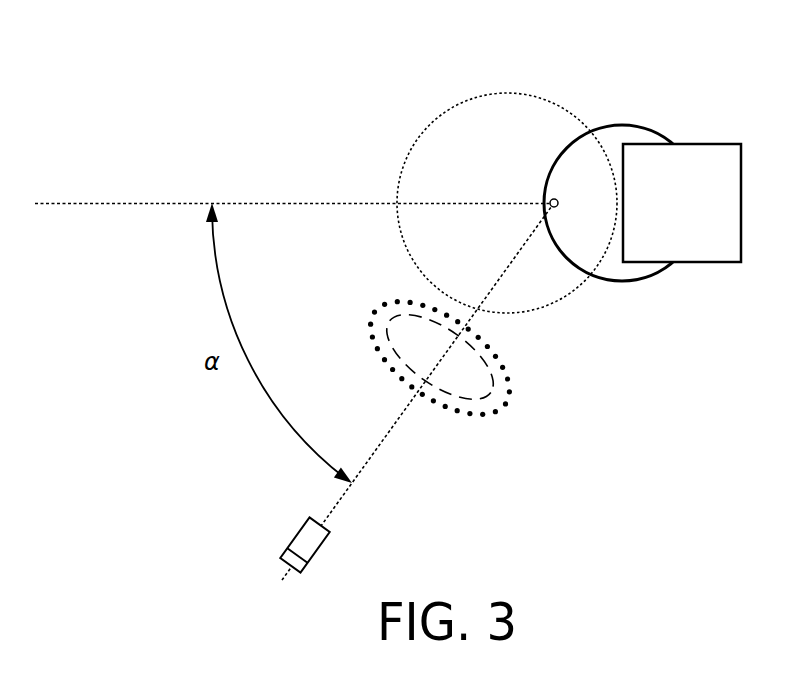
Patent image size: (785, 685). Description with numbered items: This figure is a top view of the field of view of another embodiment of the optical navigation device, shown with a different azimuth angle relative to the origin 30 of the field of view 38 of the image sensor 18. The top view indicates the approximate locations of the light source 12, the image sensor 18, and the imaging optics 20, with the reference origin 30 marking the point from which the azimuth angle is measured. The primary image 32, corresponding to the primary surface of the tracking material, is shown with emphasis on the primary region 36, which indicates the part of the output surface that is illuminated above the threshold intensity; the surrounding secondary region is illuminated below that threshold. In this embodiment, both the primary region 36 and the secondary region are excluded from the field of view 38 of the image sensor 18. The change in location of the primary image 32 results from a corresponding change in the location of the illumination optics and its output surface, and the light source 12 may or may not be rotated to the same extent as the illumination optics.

The light source 12 is at (299, 532).
The image sensor 18 is at (700, 144).
The imaging optics 20 is at (630, 124).
The reference origin 30 is at (557, 200).
The primary image 32 is at (387, 360).
The primary region 36 is at (371, 330).
The field of view 38 is at (525, 93).